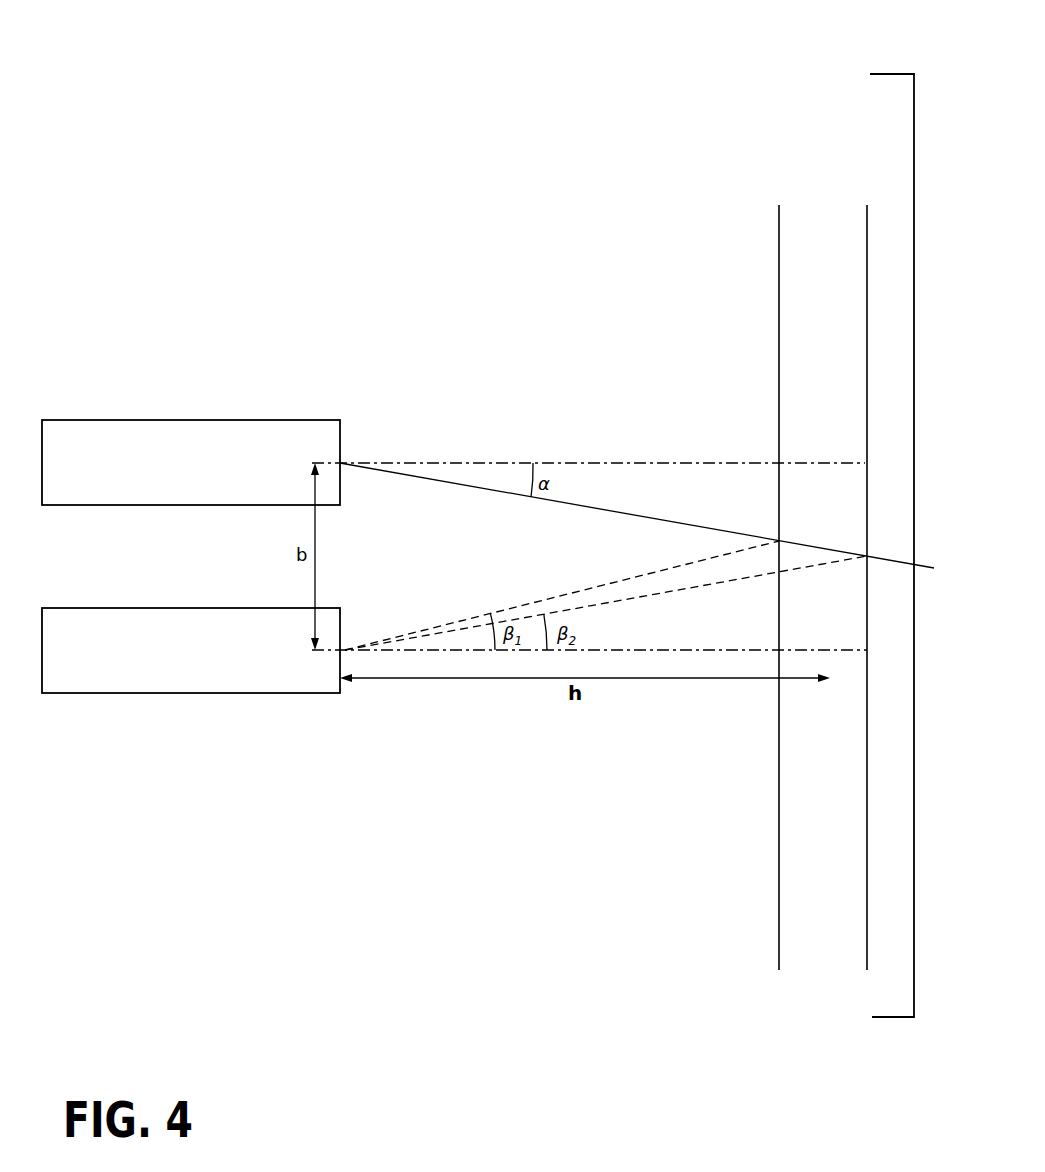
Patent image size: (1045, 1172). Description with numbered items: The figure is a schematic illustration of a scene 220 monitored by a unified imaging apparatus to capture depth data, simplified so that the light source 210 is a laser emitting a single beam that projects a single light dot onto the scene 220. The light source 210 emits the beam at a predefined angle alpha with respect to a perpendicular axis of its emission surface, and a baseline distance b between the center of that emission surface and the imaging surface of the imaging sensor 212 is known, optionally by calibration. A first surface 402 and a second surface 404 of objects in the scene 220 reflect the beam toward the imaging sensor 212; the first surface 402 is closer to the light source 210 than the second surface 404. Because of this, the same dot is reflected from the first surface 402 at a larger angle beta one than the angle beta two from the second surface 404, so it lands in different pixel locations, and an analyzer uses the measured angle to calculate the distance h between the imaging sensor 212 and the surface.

The light source 210 is at (110, 420).
The imaging sensor 212 is at (110, 608).
The scene 220 is at (856, 86).
The first surface 402 is at (762, 215).
The second surface 404 is at (856, 217).